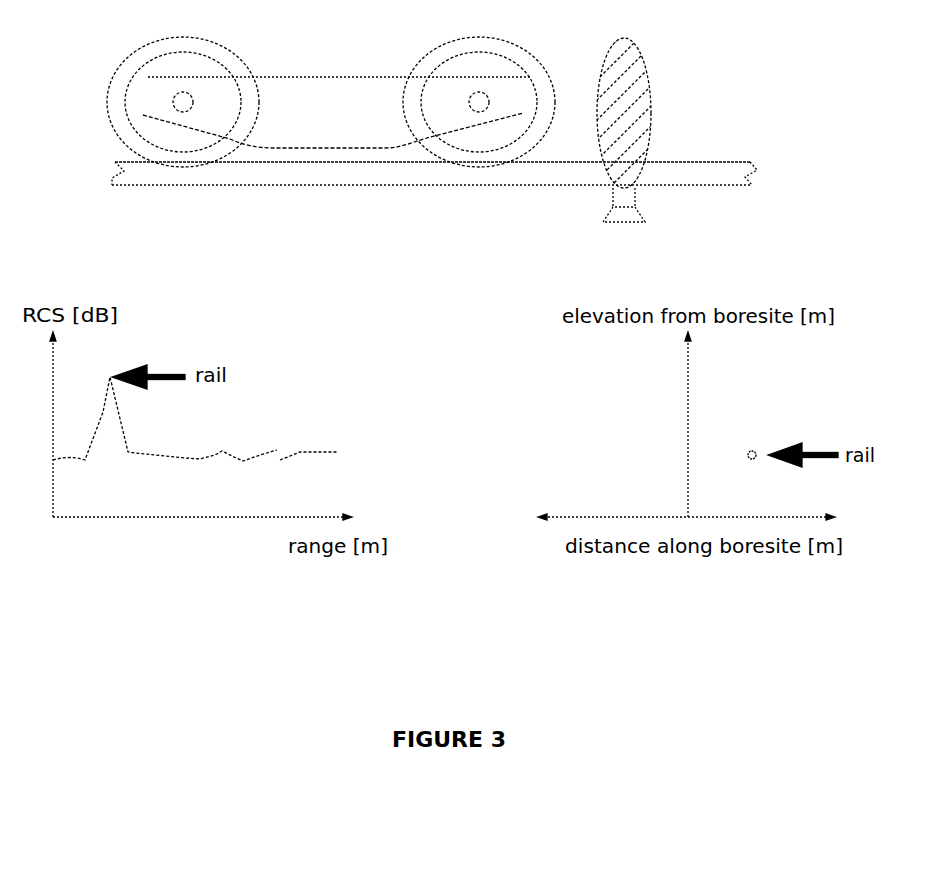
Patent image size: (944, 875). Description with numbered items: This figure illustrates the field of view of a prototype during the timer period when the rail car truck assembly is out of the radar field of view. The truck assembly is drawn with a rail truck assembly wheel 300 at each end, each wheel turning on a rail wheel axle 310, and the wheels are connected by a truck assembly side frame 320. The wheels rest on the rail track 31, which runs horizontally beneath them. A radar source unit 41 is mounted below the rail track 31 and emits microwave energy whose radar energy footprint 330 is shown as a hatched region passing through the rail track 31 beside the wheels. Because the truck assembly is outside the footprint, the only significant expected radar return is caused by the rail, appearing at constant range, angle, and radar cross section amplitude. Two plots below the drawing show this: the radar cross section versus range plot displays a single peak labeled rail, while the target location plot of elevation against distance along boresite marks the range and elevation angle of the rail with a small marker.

The rail truck assembly wheel 300 is at (542, 68).
The rail wheel axle 310 is at (193, 98).
The truck assembly side frame 320 is at (314, 77).
The radar energy footprint 330 is at (652, 63).
The rail track 31 is at (707, 158).
The radar source unit 41 is at (648, 233).